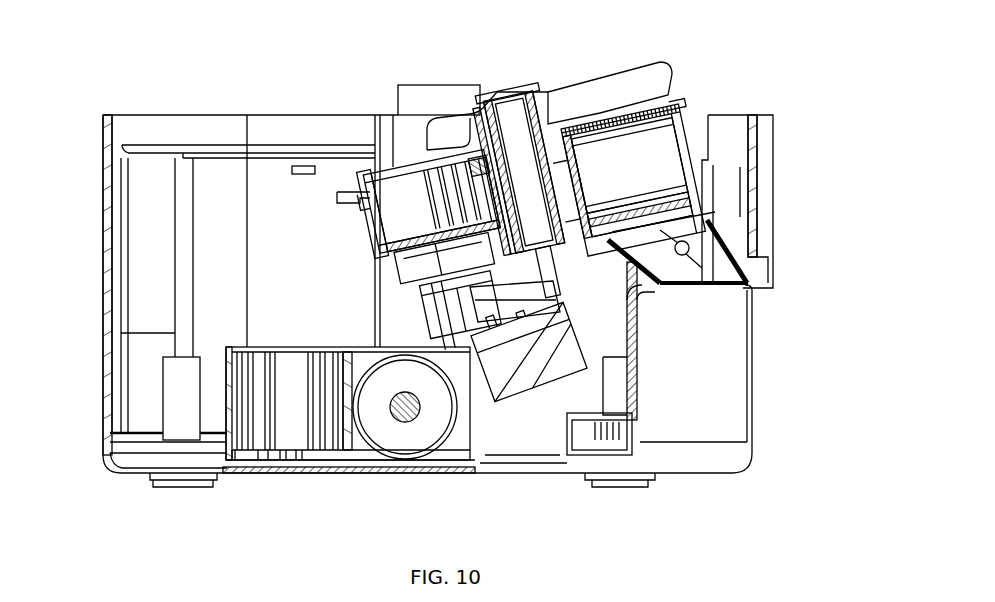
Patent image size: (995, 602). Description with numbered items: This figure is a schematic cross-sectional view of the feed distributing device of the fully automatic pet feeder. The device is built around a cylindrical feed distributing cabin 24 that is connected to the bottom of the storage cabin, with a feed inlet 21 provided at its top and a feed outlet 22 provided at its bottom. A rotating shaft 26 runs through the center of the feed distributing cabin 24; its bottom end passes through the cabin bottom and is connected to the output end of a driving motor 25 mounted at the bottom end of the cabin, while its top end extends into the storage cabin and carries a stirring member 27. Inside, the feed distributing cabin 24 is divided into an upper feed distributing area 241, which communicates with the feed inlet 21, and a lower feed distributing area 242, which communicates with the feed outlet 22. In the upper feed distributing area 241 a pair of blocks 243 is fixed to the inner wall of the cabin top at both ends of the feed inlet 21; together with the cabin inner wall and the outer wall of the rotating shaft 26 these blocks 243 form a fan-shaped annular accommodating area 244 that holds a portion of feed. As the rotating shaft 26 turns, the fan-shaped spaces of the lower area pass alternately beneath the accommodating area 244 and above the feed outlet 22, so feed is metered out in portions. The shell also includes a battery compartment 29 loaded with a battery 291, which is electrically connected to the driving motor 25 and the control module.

The feed inlet 21 is at (398, 189).
The feed outlet 22 is at (690, 263).
The feed distributing cabin 24 is at (715, 169).
The driving motor 25 is at (587, 357).
The rotating shaft 26 is at (548, 252).
The stirring member 27 is at (630, 70).
The battery compartment 29 is at (338, 345).
The upper feed distributing area 241 is at (620, 173).
The lower feed distributing area 242 is at (620, 217).
The blocks 243 is at (428, 187).
The fan-shaped annular accommodating area 244 is at (407, 230).
The battery 291 is at (399, 437).